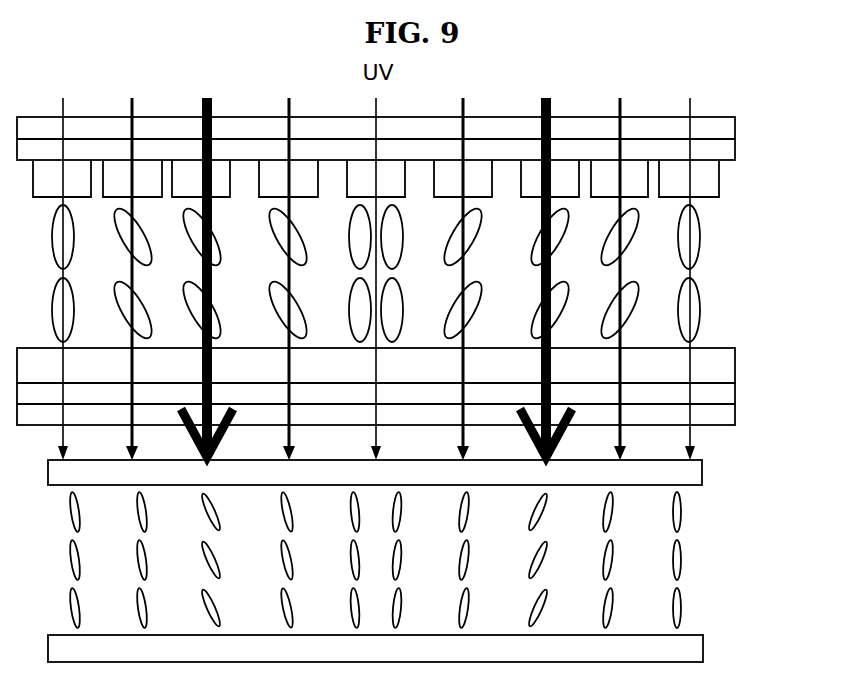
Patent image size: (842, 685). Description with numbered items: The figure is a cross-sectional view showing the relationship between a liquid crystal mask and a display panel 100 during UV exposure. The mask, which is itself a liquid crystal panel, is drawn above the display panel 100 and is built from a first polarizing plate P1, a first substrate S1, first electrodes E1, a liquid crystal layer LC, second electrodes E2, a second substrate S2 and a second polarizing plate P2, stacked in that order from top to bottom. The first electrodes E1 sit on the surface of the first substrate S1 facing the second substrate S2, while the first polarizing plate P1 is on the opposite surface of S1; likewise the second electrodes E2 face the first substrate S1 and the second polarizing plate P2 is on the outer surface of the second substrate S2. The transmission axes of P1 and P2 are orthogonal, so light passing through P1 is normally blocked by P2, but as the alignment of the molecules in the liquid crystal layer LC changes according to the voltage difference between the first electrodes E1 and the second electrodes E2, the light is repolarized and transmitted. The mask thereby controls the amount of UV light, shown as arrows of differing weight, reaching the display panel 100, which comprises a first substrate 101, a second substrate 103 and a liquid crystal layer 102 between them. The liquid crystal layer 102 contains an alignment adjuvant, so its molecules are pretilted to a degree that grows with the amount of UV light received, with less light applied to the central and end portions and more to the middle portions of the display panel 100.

The first polarizing plate P1 is at (735, 128).
The first substrate S1 is at (735, 150).
The first electrodes E1 is at (712, 183).
The liquid crystal layer LC is at (695, 241).
The second electrodes E2 is at (735, 360).
The second substrate S2 is at (735, 392).
The second polarizing plate P2 is at (735, 414).
The display panel 100 is at (443, 561).
The first substrate 101 is at (702, 470).
The liquid crystal layer 102 is at (677, 558).
The second substrate 103 is at (412, 649).